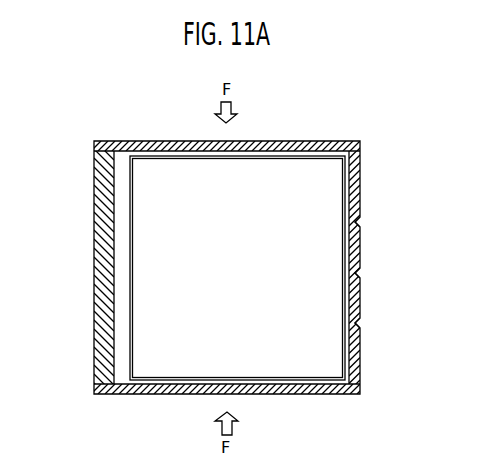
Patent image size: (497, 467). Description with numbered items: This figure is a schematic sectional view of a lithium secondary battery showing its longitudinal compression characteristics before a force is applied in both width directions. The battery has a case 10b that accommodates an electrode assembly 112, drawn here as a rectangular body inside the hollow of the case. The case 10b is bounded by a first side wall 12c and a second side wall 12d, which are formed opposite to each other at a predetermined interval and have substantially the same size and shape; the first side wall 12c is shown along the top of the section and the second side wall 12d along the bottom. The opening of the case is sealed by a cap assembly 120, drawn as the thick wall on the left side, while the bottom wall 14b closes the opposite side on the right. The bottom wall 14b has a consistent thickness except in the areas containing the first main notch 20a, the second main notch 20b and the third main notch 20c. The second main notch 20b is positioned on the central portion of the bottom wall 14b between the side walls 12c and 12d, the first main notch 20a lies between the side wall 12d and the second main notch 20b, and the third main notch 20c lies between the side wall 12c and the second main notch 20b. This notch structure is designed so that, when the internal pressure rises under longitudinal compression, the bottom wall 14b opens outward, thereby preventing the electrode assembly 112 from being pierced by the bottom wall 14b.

The case 10b is at (362, 137).
The first side wall 12c is at (283, 141).
The second side wall 12d is at (145, 394).
The cap assembly 120 is at (100, 288).
The bottom wall 14b is at (355, 363).
The first main notch 20a is at (361, 326).
The second main notch 20b is at (361, 276).
The third main notch 20c is at (361, 225).
The electrode assembly 112 is at (285, 363).